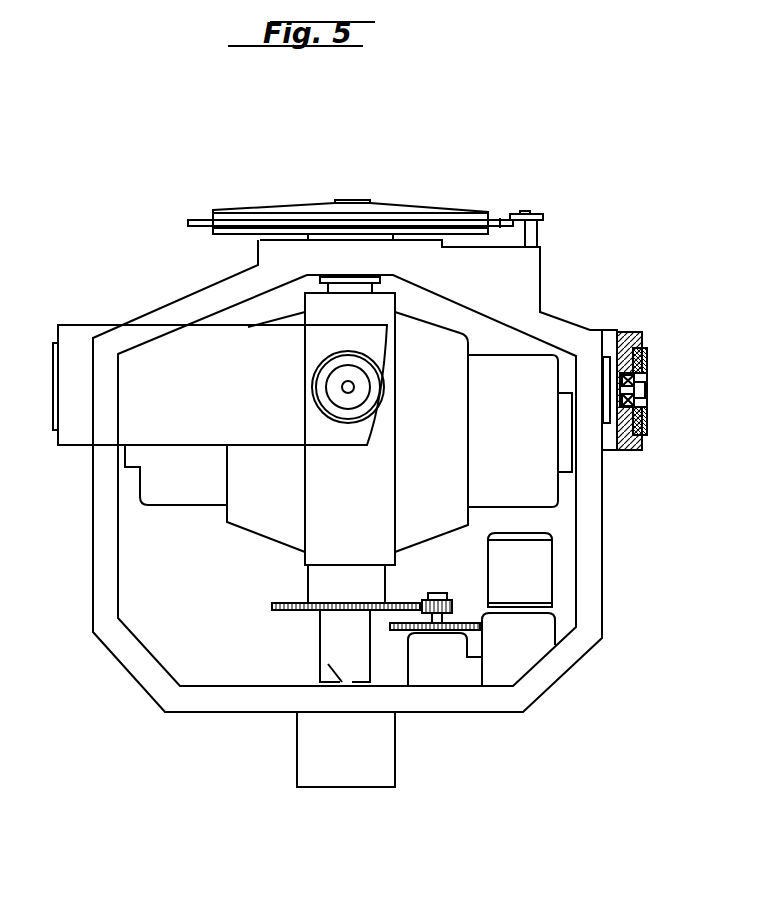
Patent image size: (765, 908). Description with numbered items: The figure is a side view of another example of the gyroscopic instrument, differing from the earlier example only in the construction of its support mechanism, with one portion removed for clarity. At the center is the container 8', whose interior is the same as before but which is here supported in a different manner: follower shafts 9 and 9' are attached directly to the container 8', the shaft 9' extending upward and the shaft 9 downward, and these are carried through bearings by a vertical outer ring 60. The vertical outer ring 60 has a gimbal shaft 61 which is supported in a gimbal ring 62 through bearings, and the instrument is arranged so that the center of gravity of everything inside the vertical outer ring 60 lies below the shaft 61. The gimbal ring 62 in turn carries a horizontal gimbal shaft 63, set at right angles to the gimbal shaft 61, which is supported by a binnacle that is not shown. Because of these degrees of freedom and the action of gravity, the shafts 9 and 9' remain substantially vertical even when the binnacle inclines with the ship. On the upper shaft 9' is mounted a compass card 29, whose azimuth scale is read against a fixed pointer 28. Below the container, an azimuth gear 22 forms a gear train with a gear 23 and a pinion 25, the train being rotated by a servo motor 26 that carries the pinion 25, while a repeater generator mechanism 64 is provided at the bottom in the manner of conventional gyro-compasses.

The vertical outer ring 60 is at (172, 310).
The follower shaft 9' is at (350, 197).
The compass card 29 is at (500, 223).
The pointer 28 is at (517, 212).
The container 8' is at (528, 395).
The gimbal shaft 61 is at (628, 390).
The gimbal ring 62 is at (83, 433).
The horizontal gimbal shaft 63 is at (342, 387).
The azimuth gear 22 is at (300, 612).
The follower shaft 9 is at (313, 646).
The pinion 25 is at (465, 585).
The gear 23 is at (470, 635).
The servo motor 26 is at (543, 568).
The repeater generator mechanism 64 is at (298, 757).